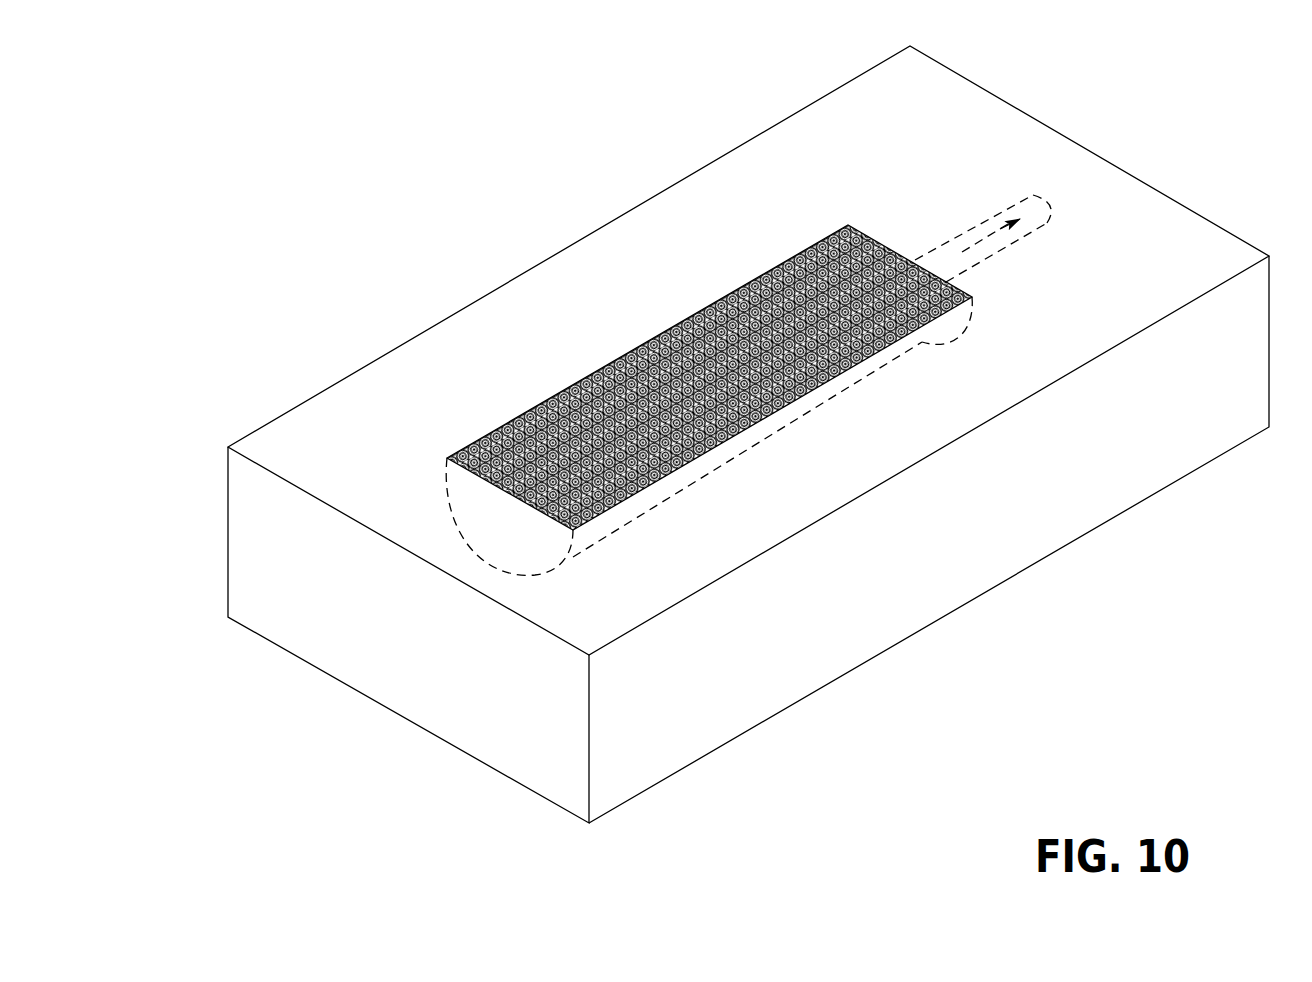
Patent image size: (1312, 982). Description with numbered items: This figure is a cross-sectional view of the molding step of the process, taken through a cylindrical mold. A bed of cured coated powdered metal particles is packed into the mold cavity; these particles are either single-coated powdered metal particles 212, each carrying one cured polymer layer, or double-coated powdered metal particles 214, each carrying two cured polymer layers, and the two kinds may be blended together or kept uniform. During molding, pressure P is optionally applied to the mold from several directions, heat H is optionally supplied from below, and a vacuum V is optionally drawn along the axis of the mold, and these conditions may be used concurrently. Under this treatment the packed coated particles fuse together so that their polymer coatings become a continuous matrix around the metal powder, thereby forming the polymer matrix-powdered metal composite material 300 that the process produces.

The polymer matrix-powdered metal composite material 300 is at (640, 345).
The cured single-coated powdered metal particles 212 is at (872, 430).
The cured double-coated powdered metal particles 214 is at (795, 258).
The pressure P is at (500, 263).
The heat H is at (303, 697).
The vacuum V is at (1045, 220).